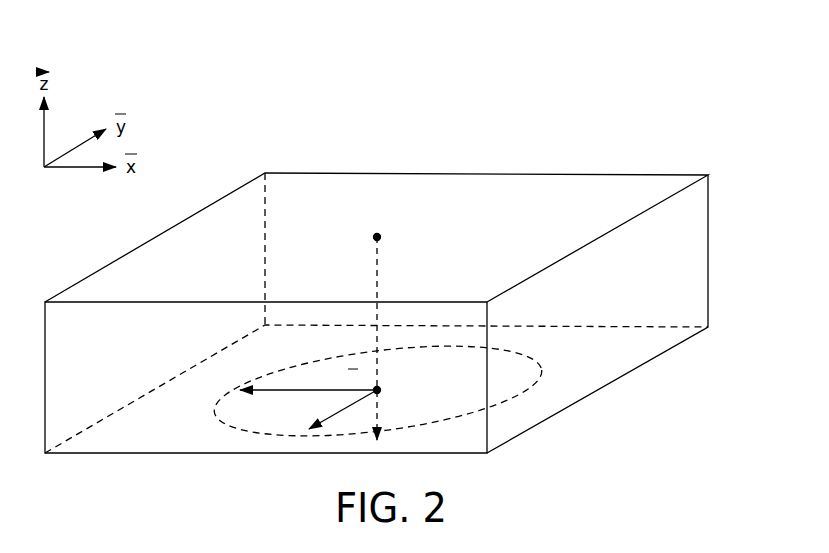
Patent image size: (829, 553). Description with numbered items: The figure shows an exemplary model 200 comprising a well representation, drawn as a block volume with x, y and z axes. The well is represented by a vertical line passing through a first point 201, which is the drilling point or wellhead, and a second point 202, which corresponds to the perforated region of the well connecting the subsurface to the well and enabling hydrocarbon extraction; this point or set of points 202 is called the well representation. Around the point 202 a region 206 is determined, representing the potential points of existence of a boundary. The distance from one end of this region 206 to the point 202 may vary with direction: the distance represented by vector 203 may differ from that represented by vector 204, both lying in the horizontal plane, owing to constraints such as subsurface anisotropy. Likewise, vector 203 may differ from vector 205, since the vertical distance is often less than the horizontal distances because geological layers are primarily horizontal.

The model 200 is at (617, 123).
The first point 201 is at (377, 237).
The second point 202 is at (380, 389).
The vector 203 is at (300, 388).
The vector 204 is at (347, 408).
The vector 205 is at (380, 412).
The region 206 is at (543, 372).